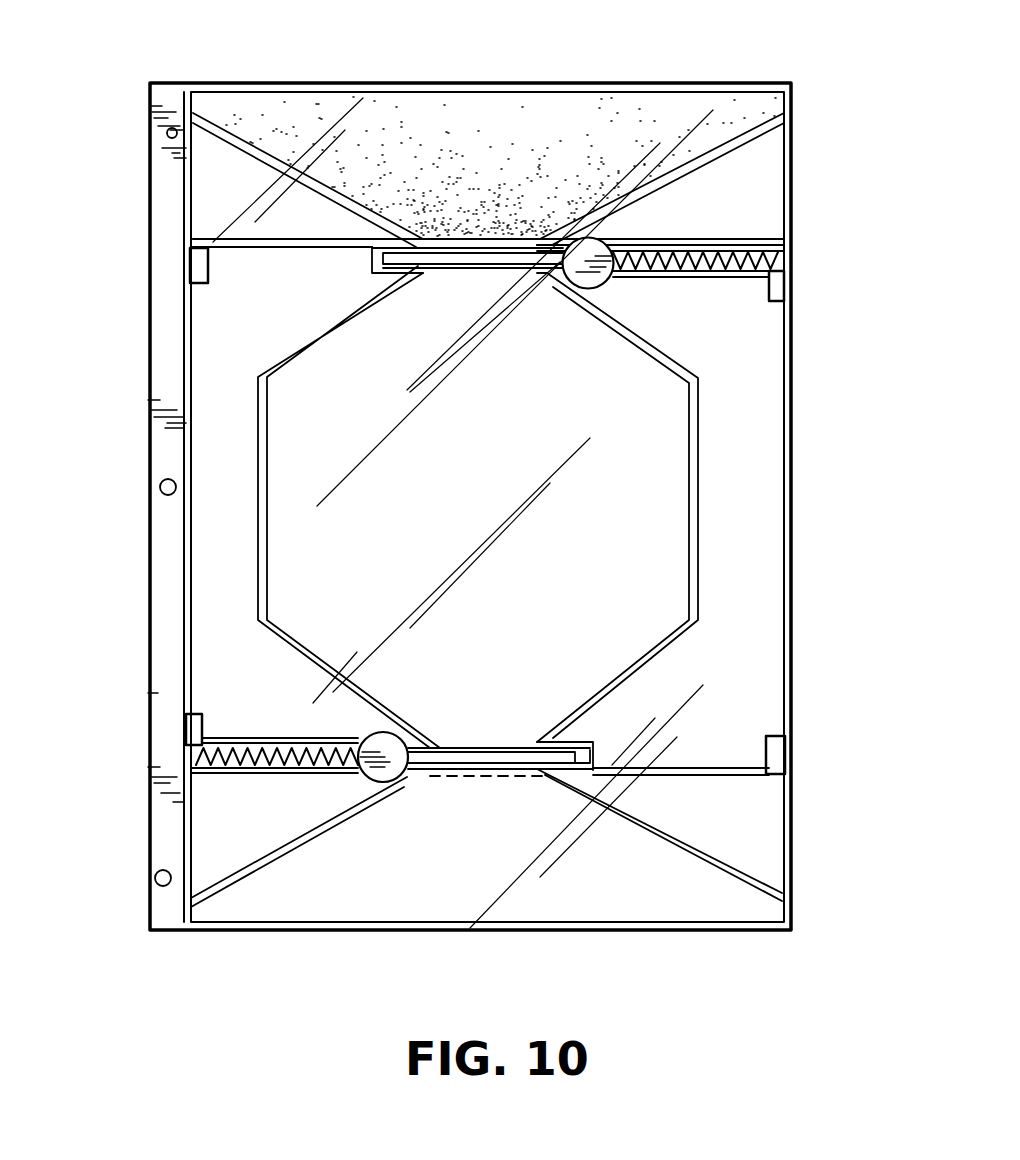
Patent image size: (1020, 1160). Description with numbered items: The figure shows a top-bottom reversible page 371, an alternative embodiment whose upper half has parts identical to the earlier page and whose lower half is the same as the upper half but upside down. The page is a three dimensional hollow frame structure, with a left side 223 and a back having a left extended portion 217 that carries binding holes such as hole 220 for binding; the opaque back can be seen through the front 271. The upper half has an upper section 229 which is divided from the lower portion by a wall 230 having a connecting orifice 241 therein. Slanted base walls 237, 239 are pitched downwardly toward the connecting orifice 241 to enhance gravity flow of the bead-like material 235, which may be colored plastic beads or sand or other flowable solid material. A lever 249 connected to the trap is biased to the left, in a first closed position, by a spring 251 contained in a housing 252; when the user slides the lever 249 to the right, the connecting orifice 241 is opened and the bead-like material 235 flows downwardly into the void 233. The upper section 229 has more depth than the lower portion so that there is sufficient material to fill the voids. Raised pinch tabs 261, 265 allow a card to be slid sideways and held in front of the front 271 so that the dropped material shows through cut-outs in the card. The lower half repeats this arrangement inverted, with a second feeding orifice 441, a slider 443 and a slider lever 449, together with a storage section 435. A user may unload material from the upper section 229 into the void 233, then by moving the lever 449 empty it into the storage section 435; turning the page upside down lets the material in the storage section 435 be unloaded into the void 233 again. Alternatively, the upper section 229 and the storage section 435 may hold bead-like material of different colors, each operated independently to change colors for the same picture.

The page 371 is at (490, 72).
The left extended portion 217 is at (160, 362).
The hole 220 is at (166, 131).
The left side 223 is at (184, 448).
The upper section 229 is at (300, 106).
The wall 230 is at (232, 236).
The void 233 is at (300, 518).
The bead-like material 235 is at (430, 168).
The slanted base wall 237 is at (716, 162).
The slanted base wall 239 is at (262, 164).
The connecting orifice 241 is at (515, 243).
The lever 249 is at (595, 281).
The spring 251 is at (727, 266).
The housing 252 is at (737, 251).
The raised pinch tab 261 is at (189, 268).
The raised pinch tab 265 is at (789, 286).
The front 271 is at (770, 403).
The storage section 435 is at (495, 858).
The second feeding orifice 441 is at (455, 772).
The slider 443 is at (497, 750).
The slider lever 449 is at (355, 742).